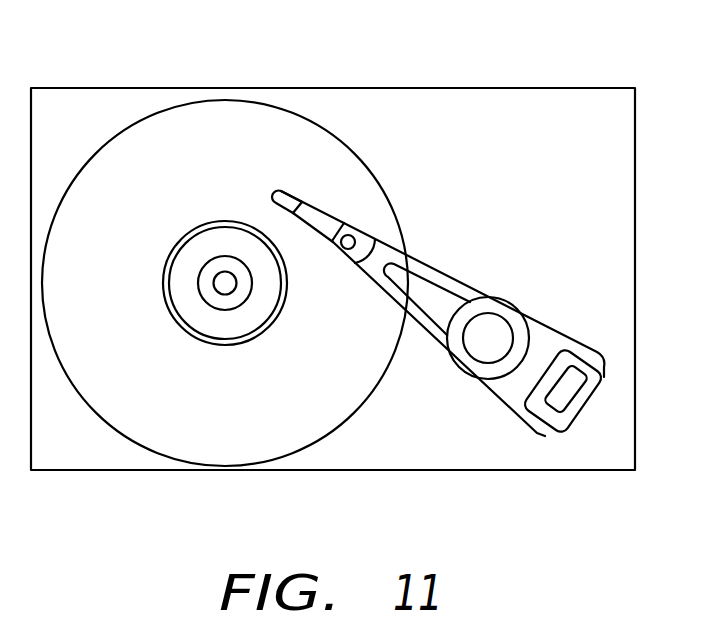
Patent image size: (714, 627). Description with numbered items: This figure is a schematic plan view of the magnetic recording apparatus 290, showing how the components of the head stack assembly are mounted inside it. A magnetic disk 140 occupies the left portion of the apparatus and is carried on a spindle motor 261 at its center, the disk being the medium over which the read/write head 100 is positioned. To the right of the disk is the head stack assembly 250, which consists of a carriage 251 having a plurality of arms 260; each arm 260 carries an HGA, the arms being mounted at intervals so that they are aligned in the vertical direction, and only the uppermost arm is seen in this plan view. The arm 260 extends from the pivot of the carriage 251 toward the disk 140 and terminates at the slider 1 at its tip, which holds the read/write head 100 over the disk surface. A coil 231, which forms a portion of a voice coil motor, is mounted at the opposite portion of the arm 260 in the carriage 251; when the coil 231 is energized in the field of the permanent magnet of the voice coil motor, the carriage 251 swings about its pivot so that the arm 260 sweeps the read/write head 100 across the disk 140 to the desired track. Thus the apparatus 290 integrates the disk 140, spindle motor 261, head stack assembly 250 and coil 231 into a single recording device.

The hard disk drive 290 is at (367, 80).
The head slider 1 is at (287, 193).
The carriage 251 is at (502, 300).
The magnetic disk 140 is at (158, 456).
The spindle motor 261 is at (228, 294).
The read/write head 100 is at (331, 242).
The arm 260 is at (438, 345).
The head stack assembly 250 is at (497, 398).
The coil 231 is at (590, 410).